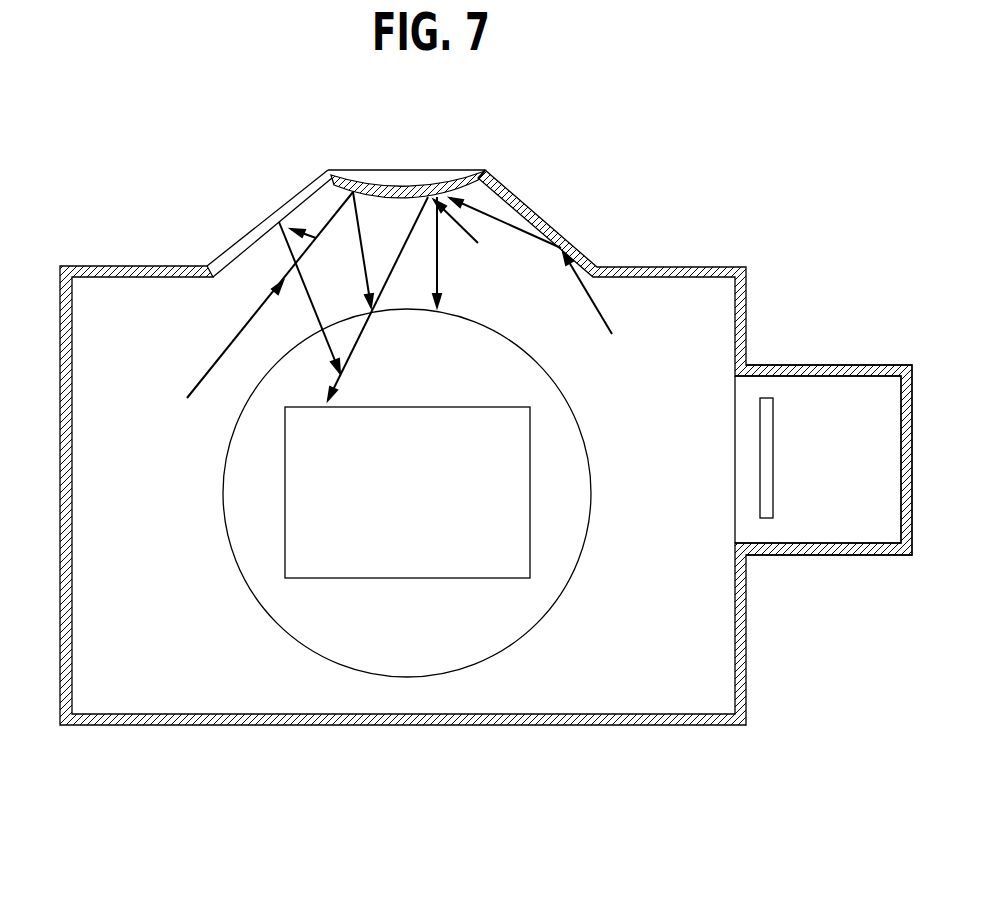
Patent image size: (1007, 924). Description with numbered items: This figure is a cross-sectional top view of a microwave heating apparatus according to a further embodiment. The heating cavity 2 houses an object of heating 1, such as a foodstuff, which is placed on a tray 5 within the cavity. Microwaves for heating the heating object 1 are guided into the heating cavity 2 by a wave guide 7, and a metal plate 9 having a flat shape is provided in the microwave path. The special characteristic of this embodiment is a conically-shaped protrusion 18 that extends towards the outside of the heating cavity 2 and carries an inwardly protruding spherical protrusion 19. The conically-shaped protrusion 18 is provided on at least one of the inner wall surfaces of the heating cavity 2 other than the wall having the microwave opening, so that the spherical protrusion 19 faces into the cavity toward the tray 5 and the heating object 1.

The object of heating 1 is at (343, 568).
The heating cavity 2 is at (680, 303).
The tray 5 is at (473, 650).
The wave guide 7 is at (843, 365).
The metal plate 9 is at (765, 519).
The conically-shaped protrusion 18 is at (292, 197).
The spherical protrusion 19 is at (367, 188).